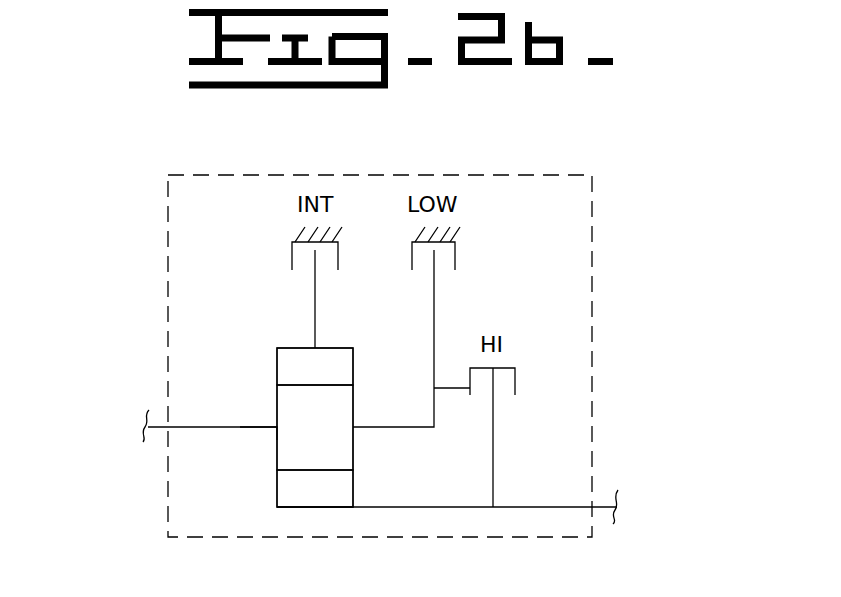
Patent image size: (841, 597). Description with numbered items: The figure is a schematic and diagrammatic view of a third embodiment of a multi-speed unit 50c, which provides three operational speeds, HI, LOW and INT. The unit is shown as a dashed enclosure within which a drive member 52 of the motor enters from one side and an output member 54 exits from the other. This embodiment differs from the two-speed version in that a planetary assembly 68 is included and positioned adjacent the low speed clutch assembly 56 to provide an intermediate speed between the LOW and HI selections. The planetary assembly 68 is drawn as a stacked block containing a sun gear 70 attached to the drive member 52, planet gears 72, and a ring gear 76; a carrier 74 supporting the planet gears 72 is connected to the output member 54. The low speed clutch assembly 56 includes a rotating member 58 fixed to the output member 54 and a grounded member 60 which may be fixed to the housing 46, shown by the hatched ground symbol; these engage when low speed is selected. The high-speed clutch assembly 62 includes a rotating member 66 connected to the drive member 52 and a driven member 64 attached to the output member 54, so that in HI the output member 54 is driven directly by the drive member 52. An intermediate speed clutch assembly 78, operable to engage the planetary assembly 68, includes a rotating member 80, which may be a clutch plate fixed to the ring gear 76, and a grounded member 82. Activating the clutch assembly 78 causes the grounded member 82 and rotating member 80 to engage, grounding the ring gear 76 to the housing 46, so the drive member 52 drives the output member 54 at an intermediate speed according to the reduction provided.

The multi-speed unit 50c is at (204, 172).
The housing 46 is at (340, 237).
The drive member 52 is at (537, 507).
The output member 54 is at (195, 427).
The low speed clutch assembly 56 is at (506, 258).
The rotating member 58 is at (434, 307).
The grounded member 60 is at (412, 255).
The high-speed clutch assembly 62 is at (540, 360).
The driven member 64 is at (515, 380).
The rotating member 66 is at (493, 470).
The planetary assembly 68 is at (270, 476).
The sun gear 70 is at (312, 490).
The planet gears 72 is at (315, 427).
The carrier 74 is at (277, 430).
The ring gear 76 is at (300, 372).
The intermediate speed clutch assembly 78 is at (222, 232).
The rotating member 80 is at (315, 320).
The grounded member 82 is at (292, 250).